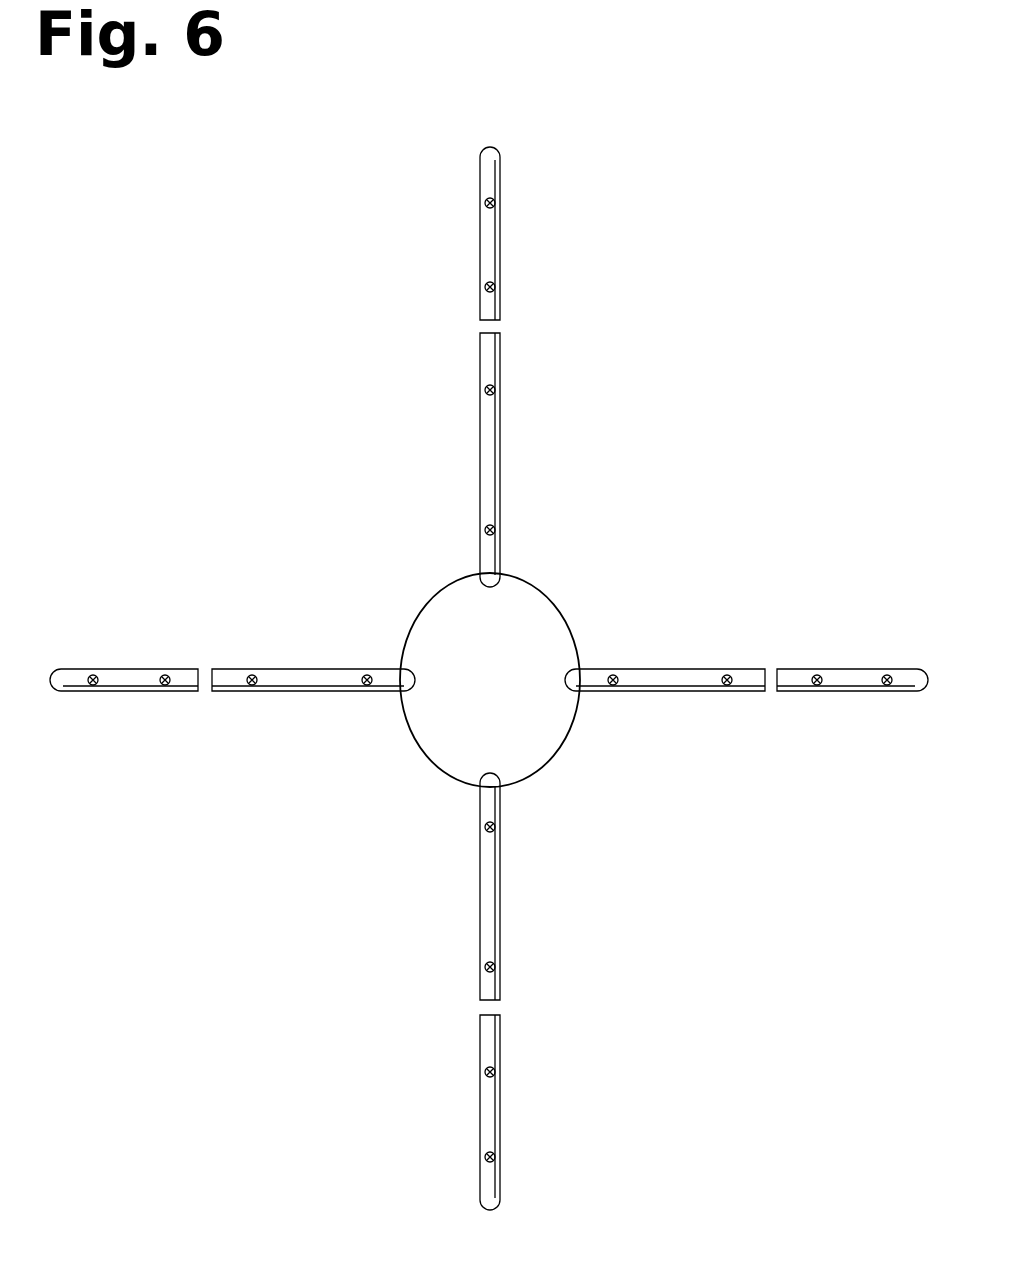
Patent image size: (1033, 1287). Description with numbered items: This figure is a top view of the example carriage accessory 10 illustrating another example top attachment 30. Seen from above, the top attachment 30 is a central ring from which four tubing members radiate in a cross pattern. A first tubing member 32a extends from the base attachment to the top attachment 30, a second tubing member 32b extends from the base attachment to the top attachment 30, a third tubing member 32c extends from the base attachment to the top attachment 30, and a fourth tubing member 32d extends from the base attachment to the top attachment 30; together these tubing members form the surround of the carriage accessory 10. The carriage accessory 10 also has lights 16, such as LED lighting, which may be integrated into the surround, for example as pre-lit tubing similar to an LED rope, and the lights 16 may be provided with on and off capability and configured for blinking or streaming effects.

The carriage accessory 10 is at (618, 314).
The lights 16 is at (483, 390).
The top attachment 30 is at (432, 598).
The first tubing member 32a is at (480, 258).
The second tubing member 32b is at (685, 668).
The third tubing member 32c is at (480, 900).
The fourth tubing member 32d is at (323, 668).